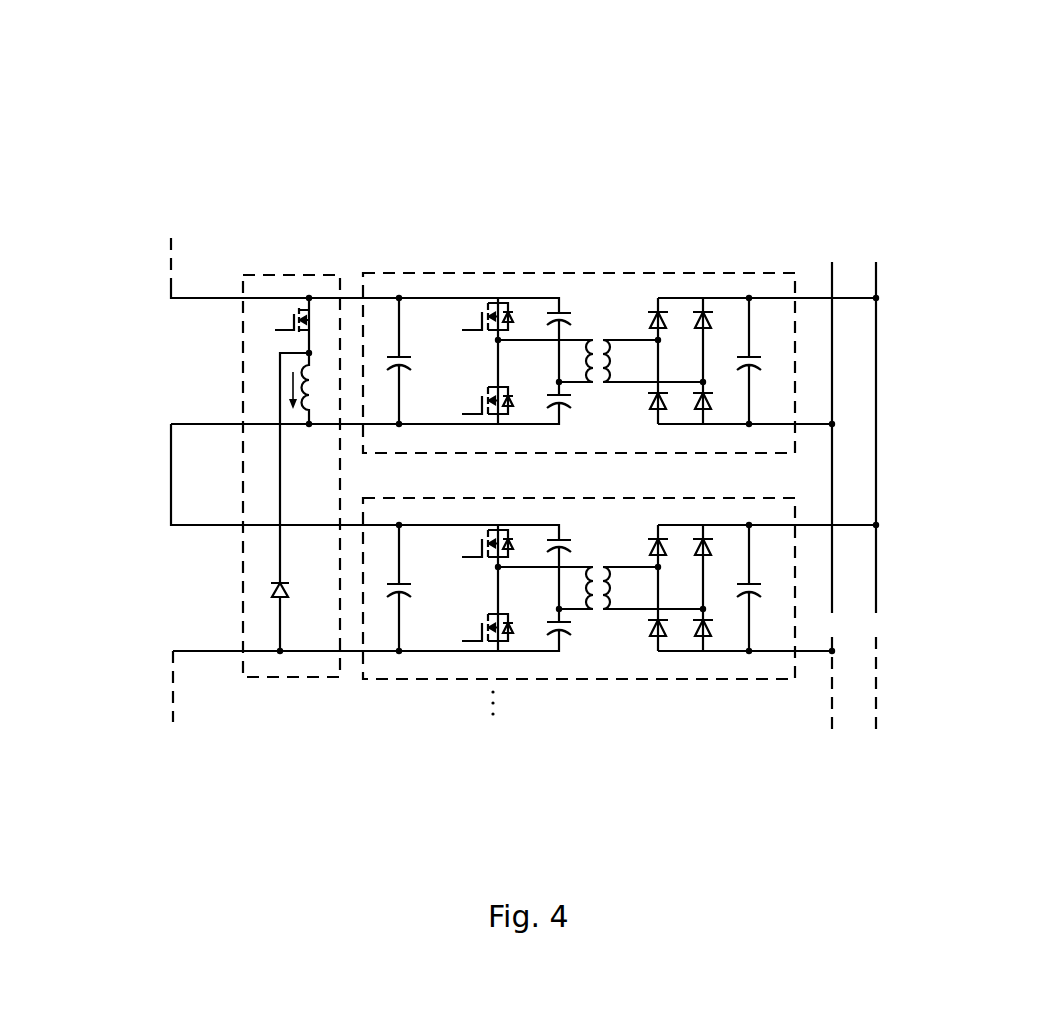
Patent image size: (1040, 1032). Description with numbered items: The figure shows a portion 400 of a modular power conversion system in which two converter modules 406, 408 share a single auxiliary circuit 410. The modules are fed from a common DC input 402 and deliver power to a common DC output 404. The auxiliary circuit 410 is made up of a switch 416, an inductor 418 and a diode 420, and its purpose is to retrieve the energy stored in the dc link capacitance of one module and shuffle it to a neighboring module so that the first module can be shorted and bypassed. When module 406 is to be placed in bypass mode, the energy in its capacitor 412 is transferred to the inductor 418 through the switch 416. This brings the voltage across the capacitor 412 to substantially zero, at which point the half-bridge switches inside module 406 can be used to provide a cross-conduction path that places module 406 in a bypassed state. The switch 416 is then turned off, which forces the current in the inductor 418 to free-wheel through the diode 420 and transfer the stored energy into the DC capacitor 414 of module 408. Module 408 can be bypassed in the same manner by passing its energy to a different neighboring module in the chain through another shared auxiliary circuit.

The portion of a modular power conversion system 400 is at (188, 118).
The DC input 402 is at (168, 258).
The DC output 404 is at (883, 365).
The module 406 is at (565, 272).
The module 408 is at (588, 680).
The auxiliary circuit 410 is at (287, 272).
The capacitor 412 is at (407, 343).
The DC capacitor 414 is at (410, 612).
The switch 416 is at (278, 319).
The inductor 418 is at (288, 385).
The diode 420 is at (270, 587).